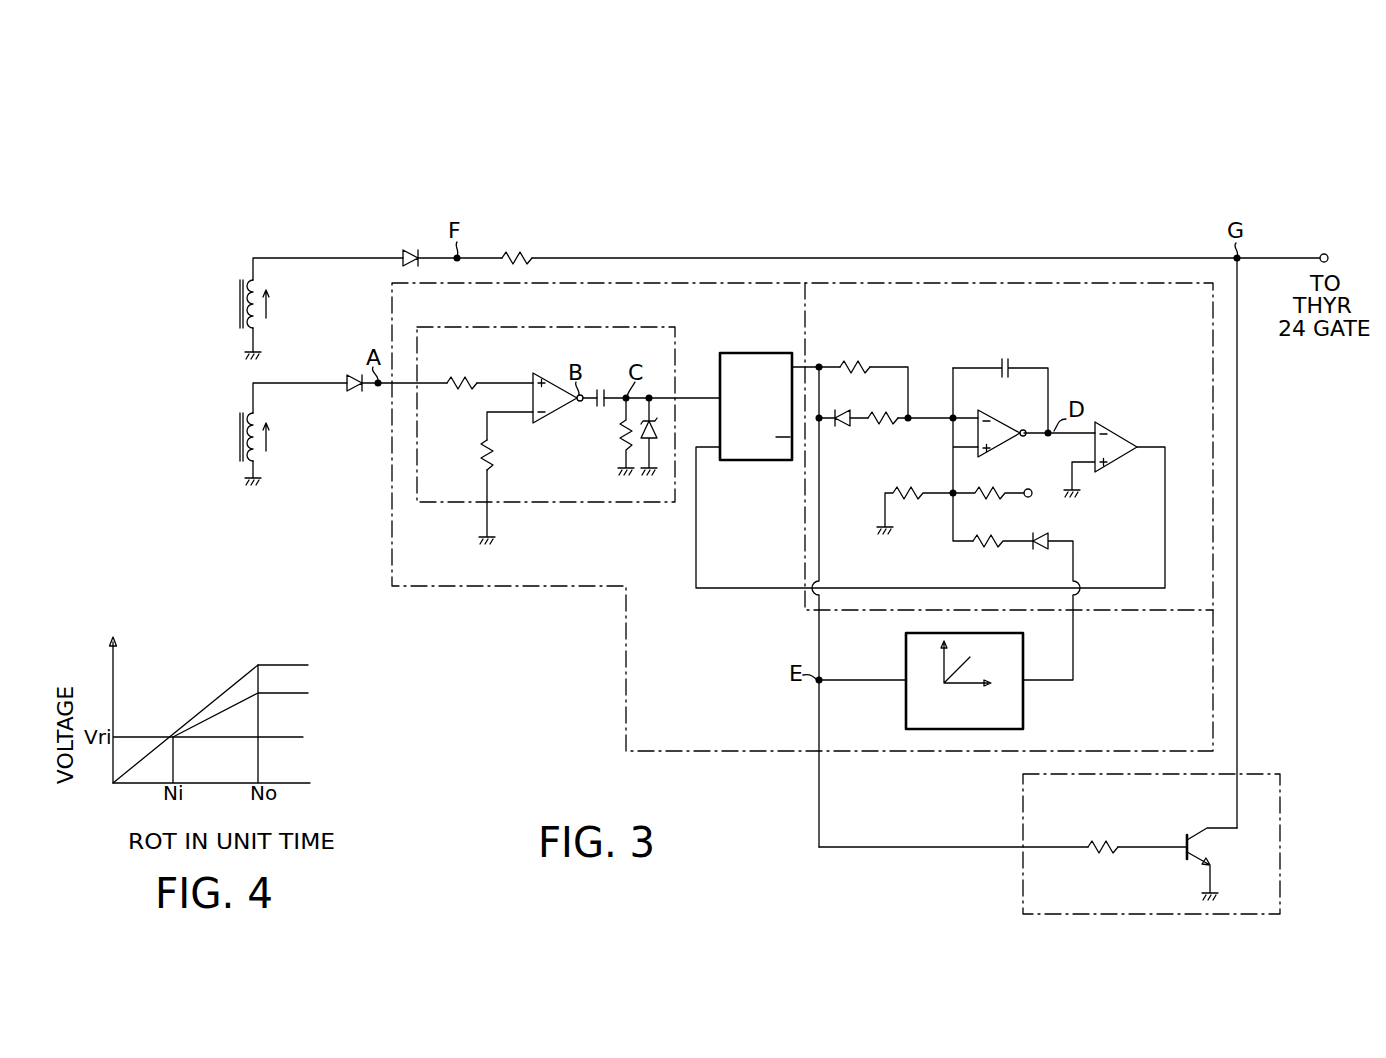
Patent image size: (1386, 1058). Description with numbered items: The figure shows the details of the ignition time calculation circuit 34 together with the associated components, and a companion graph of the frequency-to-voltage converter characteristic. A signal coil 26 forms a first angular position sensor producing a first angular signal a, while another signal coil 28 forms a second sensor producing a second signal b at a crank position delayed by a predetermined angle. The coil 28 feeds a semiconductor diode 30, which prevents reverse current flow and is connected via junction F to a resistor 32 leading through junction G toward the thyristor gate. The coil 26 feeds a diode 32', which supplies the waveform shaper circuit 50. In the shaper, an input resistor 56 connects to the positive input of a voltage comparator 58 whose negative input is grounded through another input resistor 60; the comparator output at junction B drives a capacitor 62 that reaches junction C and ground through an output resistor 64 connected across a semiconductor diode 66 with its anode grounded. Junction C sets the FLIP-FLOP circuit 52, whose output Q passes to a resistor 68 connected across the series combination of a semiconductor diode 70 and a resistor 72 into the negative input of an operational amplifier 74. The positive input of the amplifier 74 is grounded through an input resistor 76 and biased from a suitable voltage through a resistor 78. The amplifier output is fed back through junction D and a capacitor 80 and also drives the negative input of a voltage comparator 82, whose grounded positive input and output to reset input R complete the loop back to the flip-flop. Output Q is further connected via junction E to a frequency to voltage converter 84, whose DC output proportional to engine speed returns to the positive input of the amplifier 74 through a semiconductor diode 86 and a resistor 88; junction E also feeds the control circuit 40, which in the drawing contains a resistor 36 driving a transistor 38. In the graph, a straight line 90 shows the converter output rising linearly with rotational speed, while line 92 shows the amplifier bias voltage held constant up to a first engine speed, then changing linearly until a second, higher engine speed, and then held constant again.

In FIG. 3, the signal coil 26 is at (242, 457).
In FIG. 3, the signal coil 28 is at (242, 334).
In FIG. 3, the semiconductor diode 30 is at (405, 254).
In FIG. 3, the resistor 32 is at (516, 241).
In FIG. 3, the diode 32' is at (348, 410).
In FIG. 3, the ignition time calculation circuit 34 is at (626, 689).
In FIG. 3, the resistor 36 is at (1105, 853).
In FIG. 3, the transistor 38 is at (1206, 846).
In FIG. 3, the control circuit 40 is at (1023, 794).
In FIG. 3, the waveform shaper circuit 50 is at (634, 327).
In FIG. 3, the FLIP-FLOP circuit 52 is at (1143, 283).
In FIG. 3, the input resistor 56 is at (461, 377).
In FIG. 3, the voltage comparator 58 is at (533, 370).
In FIG. 3, the input resistor 60 is at (485, 463).
In FIG. 3, the capacitor 62 is at (600, 407).
In FIG. 3, the output resistor 64 is at (619, 456).
In FIG. 3, the semiconductor diode 66 is at (659, 429).
In FIG. 3, the resistor 68 is at (856, 362).
In FIG. 3, the semiconductor diode 70 is at (845, 428).
In FIG. 3, the resistor 72 is at (886, 428).
In FIG. 3, the operational amplifier 74 is at (1010, 452).
In FIG. 3, the input resistor 76 is at (920, 496).
In FIG. 3, the resistor 78 is at (998, 496).
In FIG. 3, the capacitor 80 is at (1003, 359).
In FIG. 3, the voltage comparator 82 is at (1126, 474).
In FIG. 3, the frequency to voltage converter 84 is at (1025, 716).
In FIG. 3, the semiconductor diode 86 is at (1046, 544).
In FIG. 3, the resistor 88 is at (993, 544).
In FIG. 4, the straight line 90 is at (225, 690).
In FIG. 4, the line 92 is at (138, 736).